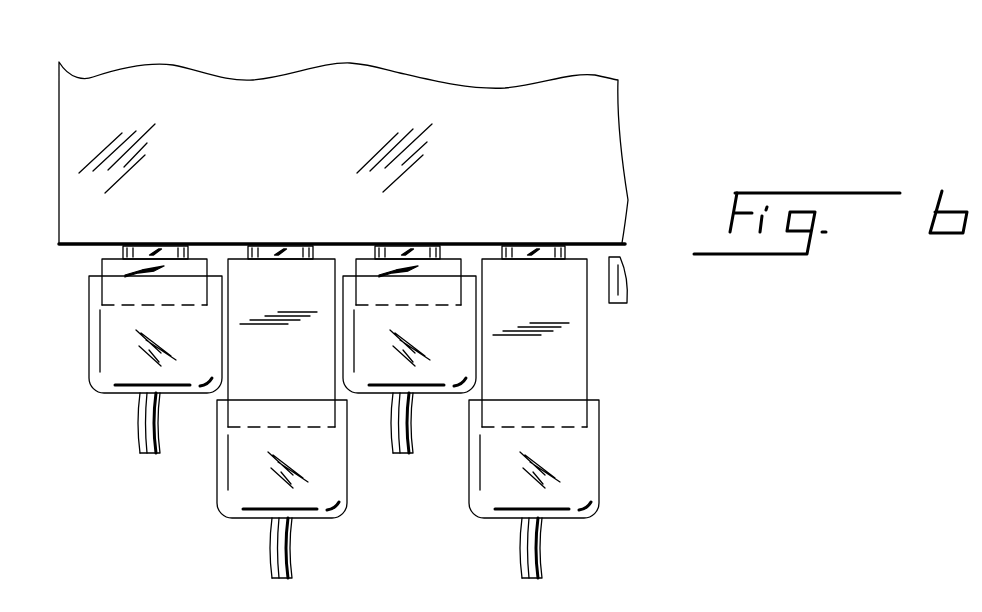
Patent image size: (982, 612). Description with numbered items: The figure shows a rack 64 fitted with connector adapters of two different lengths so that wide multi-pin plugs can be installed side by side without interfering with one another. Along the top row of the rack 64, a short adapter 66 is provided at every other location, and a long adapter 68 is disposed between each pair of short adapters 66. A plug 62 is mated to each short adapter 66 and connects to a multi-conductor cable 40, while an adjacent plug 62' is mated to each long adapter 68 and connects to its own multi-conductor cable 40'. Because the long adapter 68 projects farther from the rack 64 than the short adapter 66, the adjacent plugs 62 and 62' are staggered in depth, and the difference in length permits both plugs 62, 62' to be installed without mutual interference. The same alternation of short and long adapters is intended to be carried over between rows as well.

The rack 64 is at (130, 85).
The short adapter 66 is at (112, 266).
The plug 62 is at (127, 334).
The multi-conductor cable 40 is at (119, 423).
The long adapter 68 is at (318, 275).
The plug 62' is at (252, 459).
The multi-conductor cable 40' is at (251, 548).